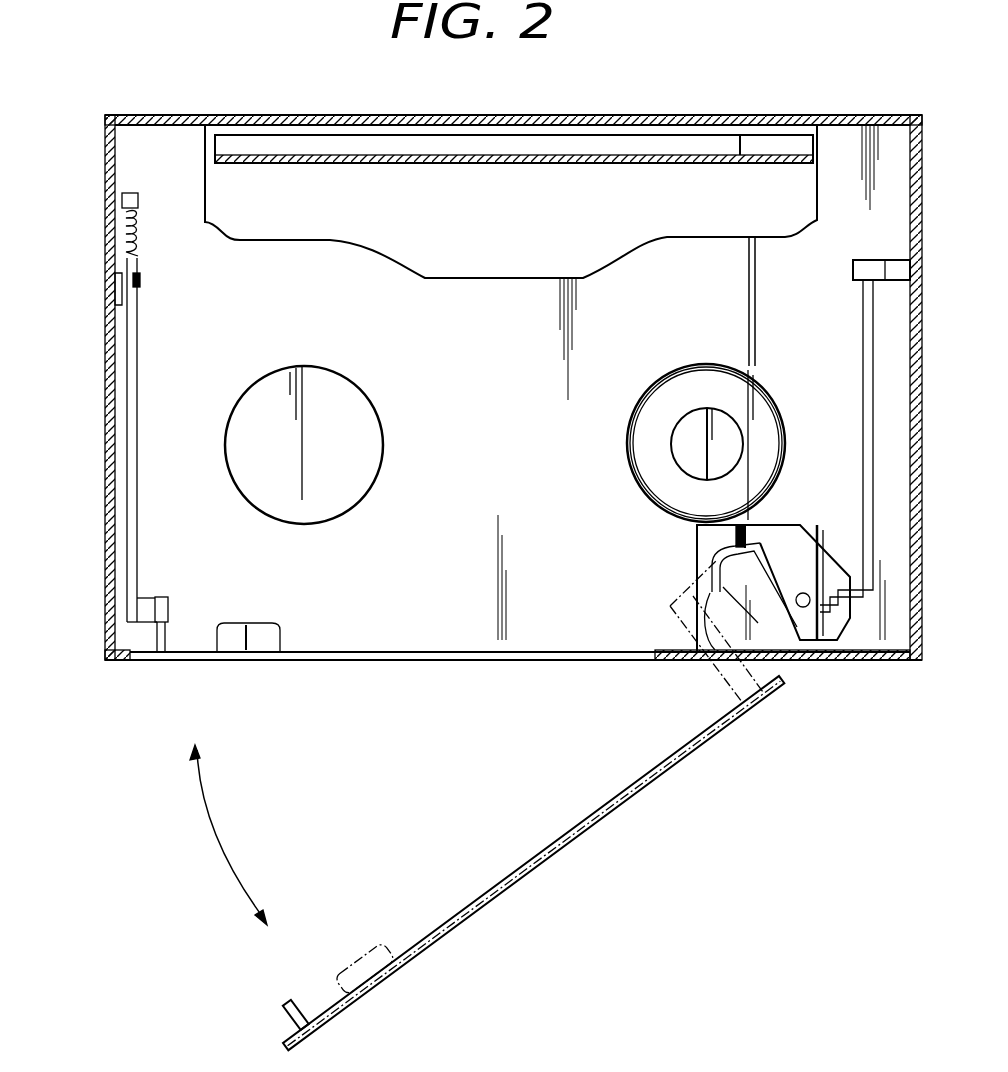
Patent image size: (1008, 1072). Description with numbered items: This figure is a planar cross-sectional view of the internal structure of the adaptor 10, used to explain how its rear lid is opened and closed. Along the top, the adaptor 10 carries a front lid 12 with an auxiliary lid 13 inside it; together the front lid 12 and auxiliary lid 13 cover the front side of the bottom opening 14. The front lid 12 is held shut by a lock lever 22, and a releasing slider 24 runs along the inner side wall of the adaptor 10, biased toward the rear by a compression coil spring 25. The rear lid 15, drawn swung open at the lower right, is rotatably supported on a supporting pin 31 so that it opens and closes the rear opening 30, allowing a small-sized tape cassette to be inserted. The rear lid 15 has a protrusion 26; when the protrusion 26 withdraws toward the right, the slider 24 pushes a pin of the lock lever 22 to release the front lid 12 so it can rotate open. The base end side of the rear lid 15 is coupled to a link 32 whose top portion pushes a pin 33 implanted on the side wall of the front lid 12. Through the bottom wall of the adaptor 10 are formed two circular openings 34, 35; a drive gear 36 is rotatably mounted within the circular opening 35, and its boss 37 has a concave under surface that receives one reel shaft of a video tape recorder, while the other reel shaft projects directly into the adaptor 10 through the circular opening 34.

The adaptor 10 is at (106, 467).
The front lid 12 is at (613, 116).
The auxiliary lid 13 is at (612, 165).
The bottom opening 14 is at (410, 268).
The rear lid 15 is at (581, 822).
The lock lever 22 is at (114, 284).
The releasing slider 24 is at (136, 398).
The compression coil spring 25 is at (140, 243).
The protrusion 26 is at (164, 638).
The rear opening 30 is at (131, 661).
The supporting pin 31 is at (776, 545).
The link 32 is at (862, 393).
The pin 33 is at (856, 270).
The circular opening 34 is at (366, 476).
The circular opening 35 is at (636, 455).
The drive gear 36 is at (662, 406).
The boss 37 is at (683, 463).